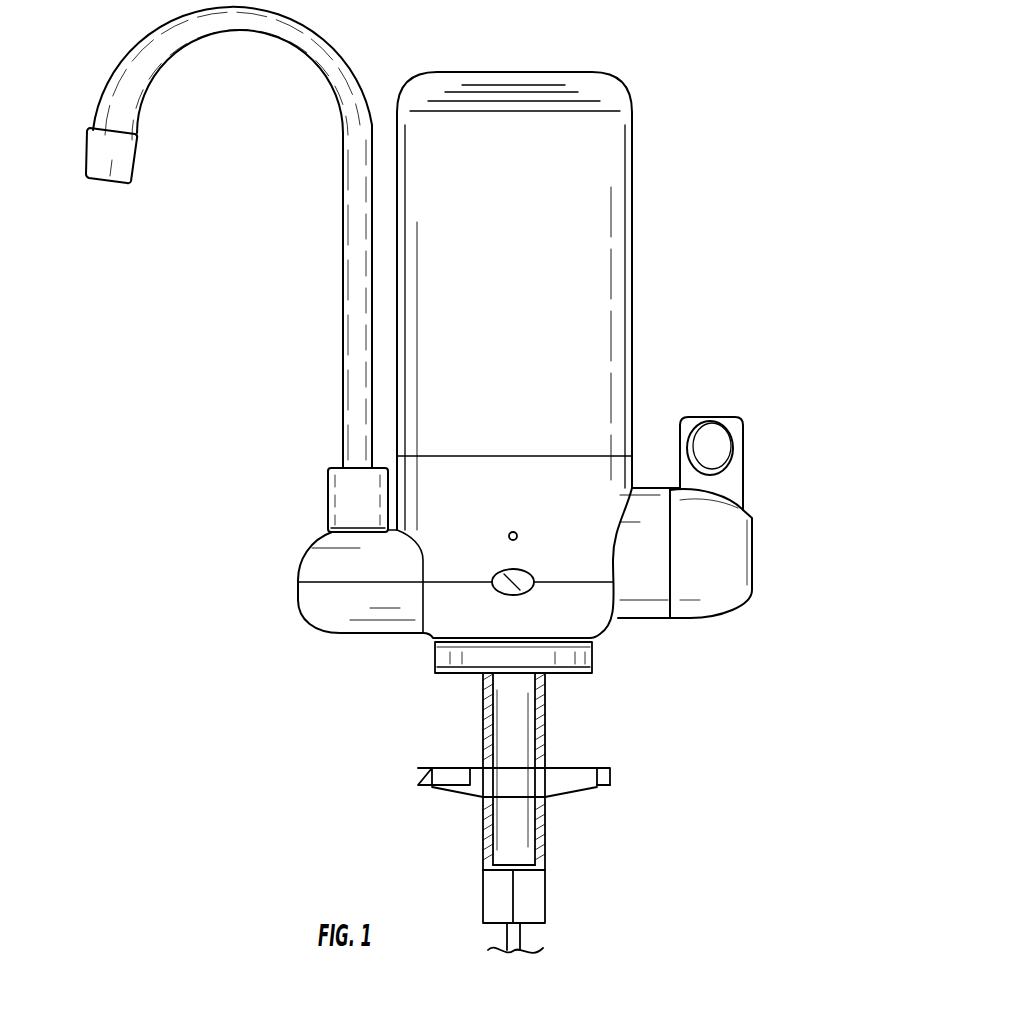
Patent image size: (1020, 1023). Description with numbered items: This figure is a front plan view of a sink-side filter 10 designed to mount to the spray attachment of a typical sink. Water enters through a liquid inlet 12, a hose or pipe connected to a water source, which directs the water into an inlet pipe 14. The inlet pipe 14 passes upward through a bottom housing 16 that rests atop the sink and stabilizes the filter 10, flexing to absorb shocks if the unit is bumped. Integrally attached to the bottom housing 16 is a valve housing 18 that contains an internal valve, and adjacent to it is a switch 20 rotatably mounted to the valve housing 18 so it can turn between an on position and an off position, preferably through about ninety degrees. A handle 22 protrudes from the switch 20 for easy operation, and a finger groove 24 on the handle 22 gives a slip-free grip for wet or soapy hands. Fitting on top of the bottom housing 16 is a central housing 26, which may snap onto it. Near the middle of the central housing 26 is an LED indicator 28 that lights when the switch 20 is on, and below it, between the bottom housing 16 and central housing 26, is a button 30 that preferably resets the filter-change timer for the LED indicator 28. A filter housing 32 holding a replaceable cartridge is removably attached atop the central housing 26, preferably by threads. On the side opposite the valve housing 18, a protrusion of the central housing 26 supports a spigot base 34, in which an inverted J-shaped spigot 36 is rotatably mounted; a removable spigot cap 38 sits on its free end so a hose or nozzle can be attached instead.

The sink-side filter 10 is at (702, 88).
The liquid inlet 12 is at (513, 935).
The inlet pipe 14 is at (513, 842).
The bottom housing 16 is at (592, 605).
The valve housing 18 is at (638, 573).
The switch 20 is at (717, 557).
The handle 22 is at (733, 479).
The finger groove 24 is at (717, 448).
The central housing 26 is at (467, 527).
The LED indicator 28 is at (516, 532).
The button 30 is at (520, 590).
The filter housing 32 is at (560, 245).
The spigot base 34 is at (342, 497).
The spigot 36 is at (358, 419).
The spigot cap 38 is at (107, 150).